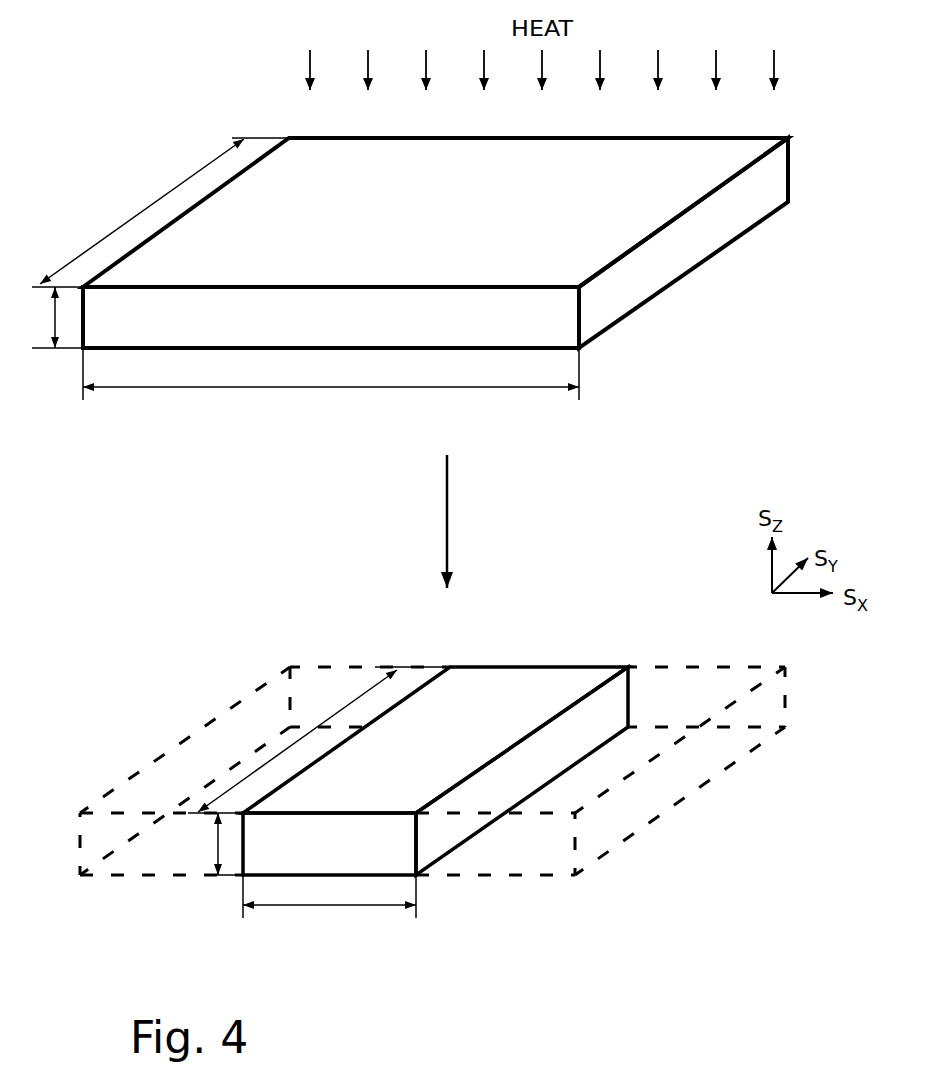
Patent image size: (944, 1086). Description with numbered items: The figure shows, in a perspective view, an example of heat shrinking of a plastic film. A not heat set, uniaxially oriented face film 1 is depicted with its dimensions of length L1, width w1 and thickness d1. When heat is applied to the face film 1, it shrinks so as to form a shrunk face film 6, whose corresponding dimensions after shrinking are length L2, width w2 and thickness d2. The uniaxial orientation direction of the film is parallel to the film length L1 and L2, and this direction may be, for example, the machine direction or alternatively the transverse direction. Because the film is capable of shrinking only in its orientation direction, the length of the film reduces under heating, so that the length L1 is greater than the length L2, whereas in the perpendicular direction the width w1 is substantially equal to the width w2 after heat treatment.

The label film 1 is at (278, 110).
The shrunk label film 6 is at (420, 654).
The width of a label film prior to shrinking w1 is at (160, 212).
The thickness of a label film prior to shrinking d1 is at (50, 317).
The length of a label film prior to shrinking L1 is at (331, 383).
The width of a shrunk label film w2 is at (292, 745).
The thickness of a shrunk label film d2 is at (210, 844).
The length of a shrunk label film L2 is at (329, 896).